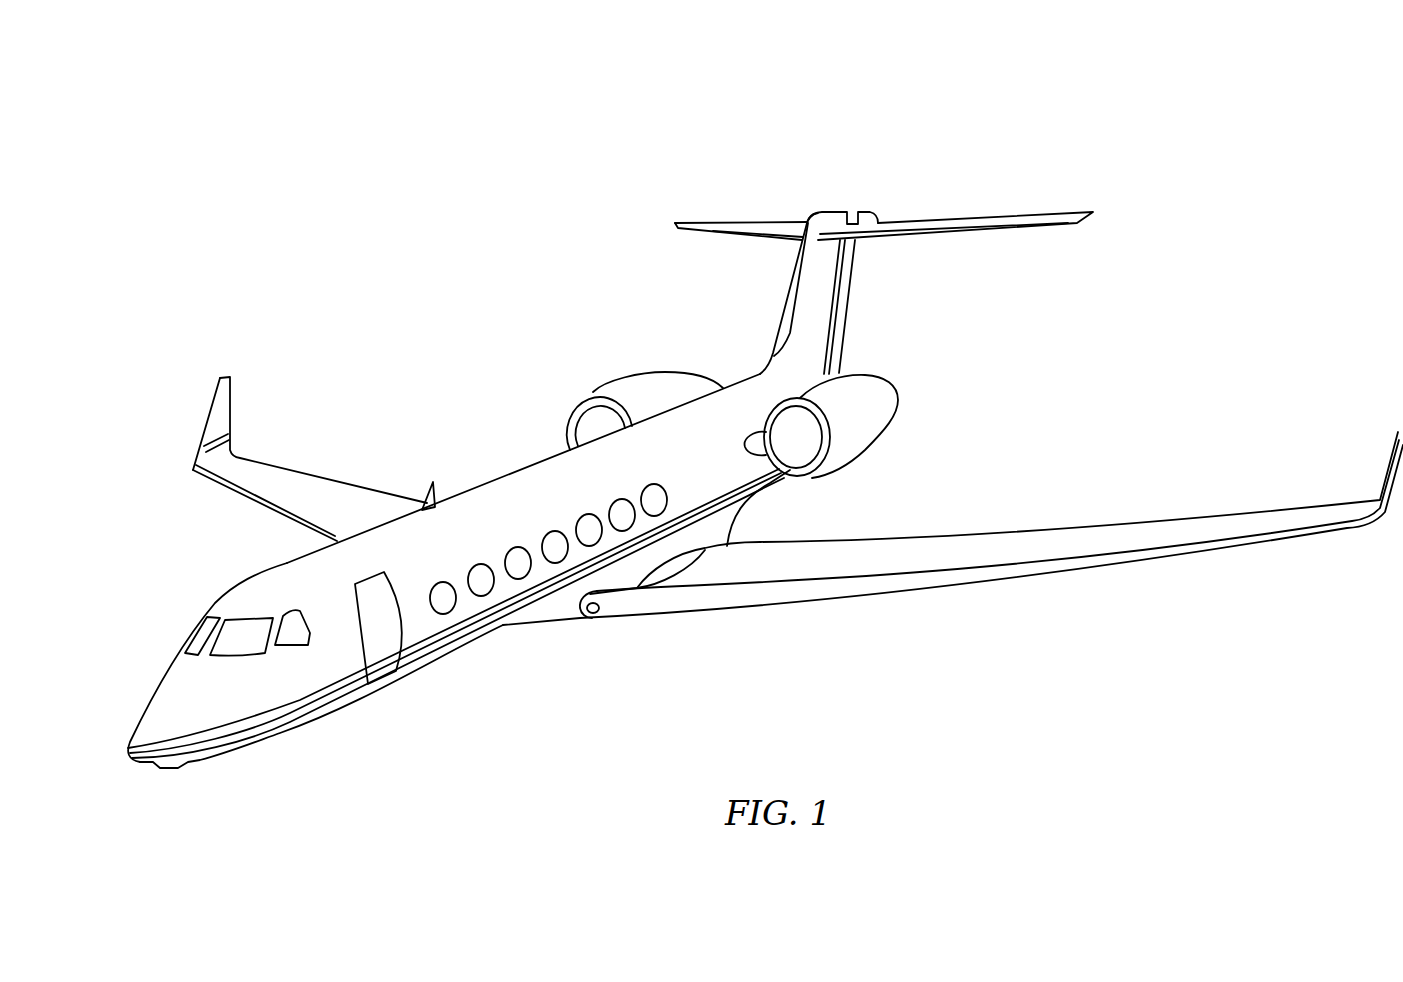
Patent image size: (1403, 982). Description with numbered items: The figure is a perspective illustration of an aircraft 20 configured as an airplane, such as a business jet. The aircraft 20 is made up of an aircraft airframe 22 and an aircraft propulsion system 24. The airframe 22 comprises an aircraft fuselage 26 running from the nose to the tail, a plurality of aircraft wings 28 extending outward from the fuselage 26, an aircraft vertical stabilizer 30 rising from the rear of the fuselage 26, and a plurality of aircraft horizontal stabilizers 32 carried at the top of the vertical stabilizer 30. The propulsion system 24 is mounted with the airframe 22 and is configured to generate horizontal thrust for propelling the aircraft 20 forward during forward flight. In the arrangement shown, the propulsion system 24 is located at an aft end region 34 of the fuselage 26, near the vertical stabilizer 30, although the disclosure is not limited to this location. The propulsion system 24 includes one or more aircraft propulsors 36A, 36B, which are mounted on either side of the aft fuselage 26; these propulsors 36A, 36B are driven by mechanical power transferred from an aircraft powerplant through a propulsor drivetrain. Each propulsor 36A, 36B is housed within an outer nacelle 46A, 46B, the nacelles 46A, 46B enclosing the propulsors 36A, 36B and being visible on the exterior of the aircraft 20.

The aircraft 20 is at (1226, 163).
The aircraft airframe 22 is at (175, 575).
The aircraft propulsion system 24 is at (917, 426).
The aircraft fuselage 26 is at (480, 481).
The aircraft wings 28 is at (320, 470).
The aircraft vertical stabilizer 30 is at (782, 298).
The aircraft horizontal stabilizers 32 is at (716, 238).
The aft end region 34 is at (773, 497).
The aircraft propulsor 36A is at (589, 380).
The aircraft propulsor 36B is at (882, 468).
The nacelle 46A is at (648, 376).
The nacelle 46B is at (878, 372).